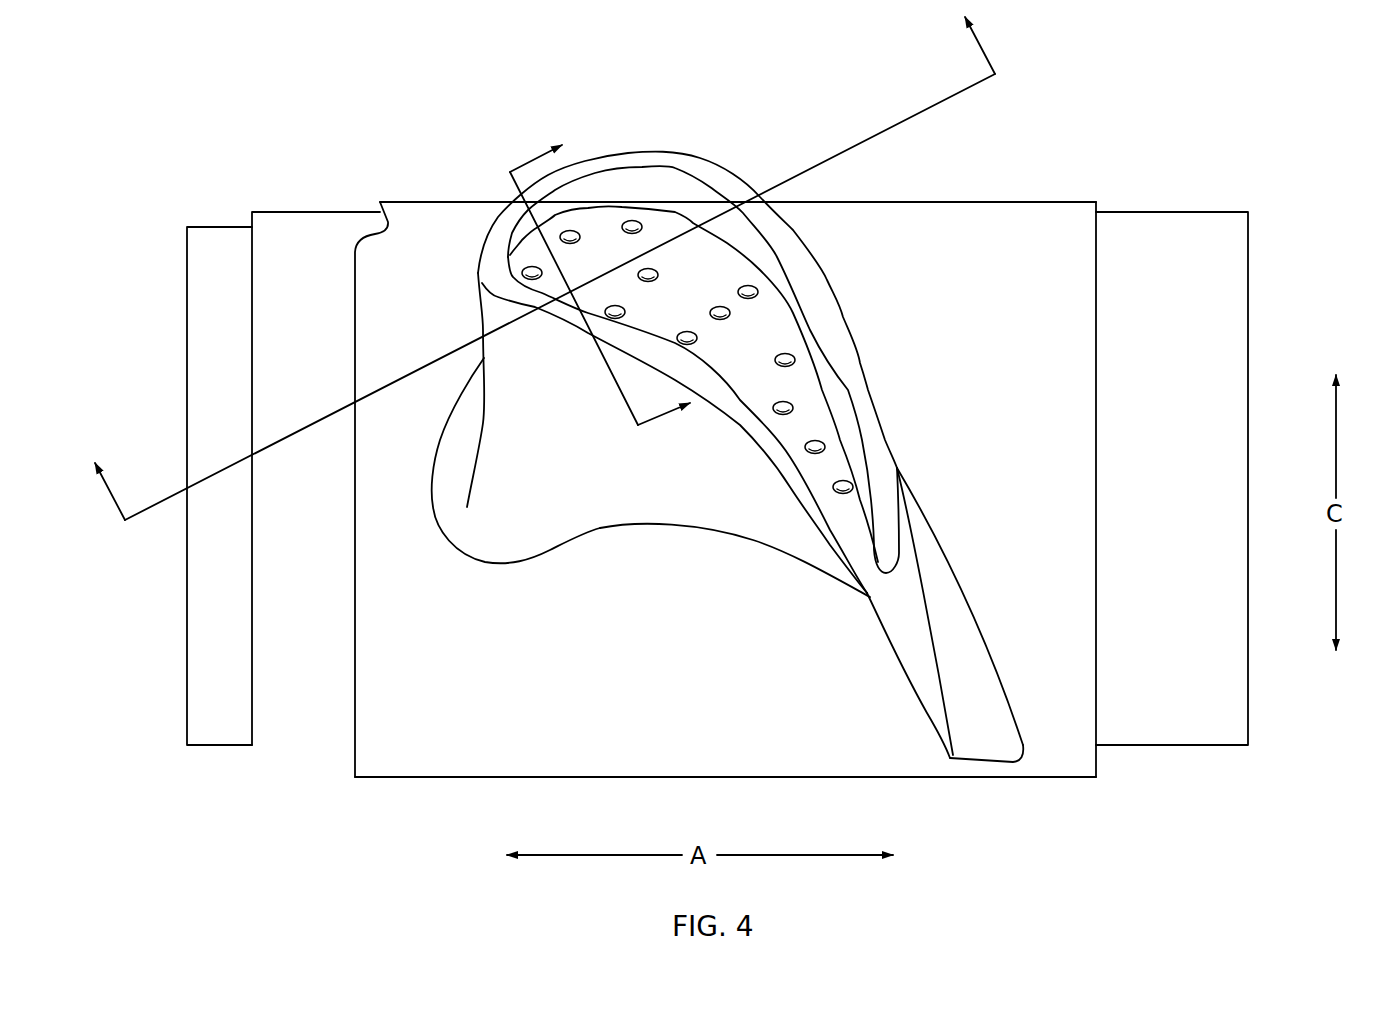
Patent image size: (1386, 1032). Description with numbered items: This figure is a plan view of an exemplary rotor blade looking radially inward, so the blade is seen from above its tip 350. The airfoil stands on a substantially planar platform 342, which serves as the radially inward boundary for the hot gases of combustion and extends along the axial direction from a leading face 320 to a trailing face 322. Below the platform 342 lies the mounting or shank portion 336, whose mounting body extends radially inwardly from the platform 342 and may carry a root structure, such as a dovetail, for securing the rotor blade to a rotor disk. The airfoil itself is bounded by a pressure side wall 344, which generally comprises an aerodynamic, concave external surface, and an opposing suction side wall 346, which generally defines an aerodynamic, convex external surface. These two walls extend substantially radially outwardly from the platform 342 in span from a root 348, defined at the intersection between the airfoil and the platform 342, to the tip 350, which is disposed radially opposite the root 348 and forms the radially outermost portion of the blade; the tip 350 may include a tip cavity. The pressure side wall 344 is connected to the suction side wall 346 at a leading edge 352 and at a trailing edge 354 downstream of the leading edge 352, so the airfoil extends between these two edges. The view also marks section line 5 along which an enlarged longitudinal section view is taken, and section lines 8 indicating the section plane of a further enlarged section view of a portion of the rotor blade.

The leading face 320 is at (353, 325).
The trailing face 322 is at (1096, 658).
The mounting or shank portion 336 is at (290, 250).
The platform 342 is at (502, 755).
The pressure side wall 344 is at (580, 493).
The suction side wall 346 is at (940, 593).
The root 348 is at (713, 533).
The tip 350 is at (802, 273).
The leading edge 352 is at (477, 463).
The trailing edge 354 is at (983, 760).
The section line 5- 5 is at (550, 274).
The section lines 8- 8 is at (599, 288).